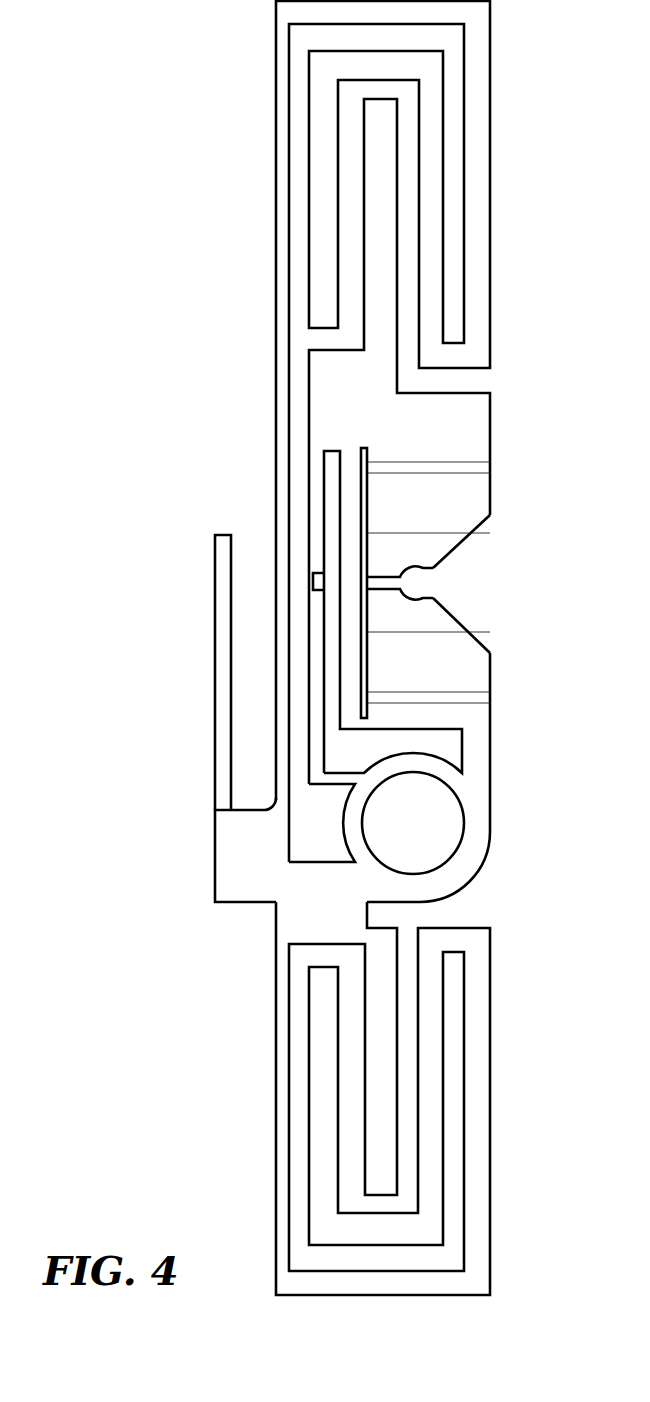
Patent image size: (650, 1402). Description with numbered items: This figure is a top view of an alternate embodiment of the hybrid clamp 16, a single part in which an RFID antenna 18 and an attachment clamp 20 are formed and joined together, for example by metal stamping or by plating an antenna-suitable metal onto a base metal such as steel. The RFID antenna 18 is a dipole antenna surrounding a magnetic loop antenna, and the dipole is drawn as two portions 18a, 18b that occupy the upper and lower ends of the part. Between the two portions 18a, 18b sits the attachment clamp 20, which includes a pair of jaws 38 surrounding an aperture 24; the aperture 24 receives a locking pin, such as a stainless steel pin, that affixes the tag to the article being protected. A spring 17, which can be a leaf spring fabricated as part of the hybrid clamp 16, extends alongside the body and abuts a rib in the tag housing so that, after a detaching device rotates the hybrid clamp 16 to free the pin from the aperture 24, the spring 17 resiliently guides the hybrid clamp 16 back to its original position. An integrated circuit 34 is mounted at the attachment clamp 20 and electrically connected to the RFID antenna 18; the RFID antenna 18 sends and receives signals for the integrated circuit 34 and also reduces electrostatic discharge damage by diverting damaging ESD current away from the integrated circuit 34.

The hybrid clamp 16 is at (190, 92).
The spring 17 is at (220, 655).
The RFID antenna 18 is at (268, 977).
The first portion of the dipole antenna 18a is at (283, 236).
The second portion of the dipole antenna 18b is at (280, 1117).
The attachment clamp 20 is at (364, 414).
The aperture 24 is at (428, 583).
The integrated circuit 34 is at (313, 582).
The jaws 38 is at (485, 431).